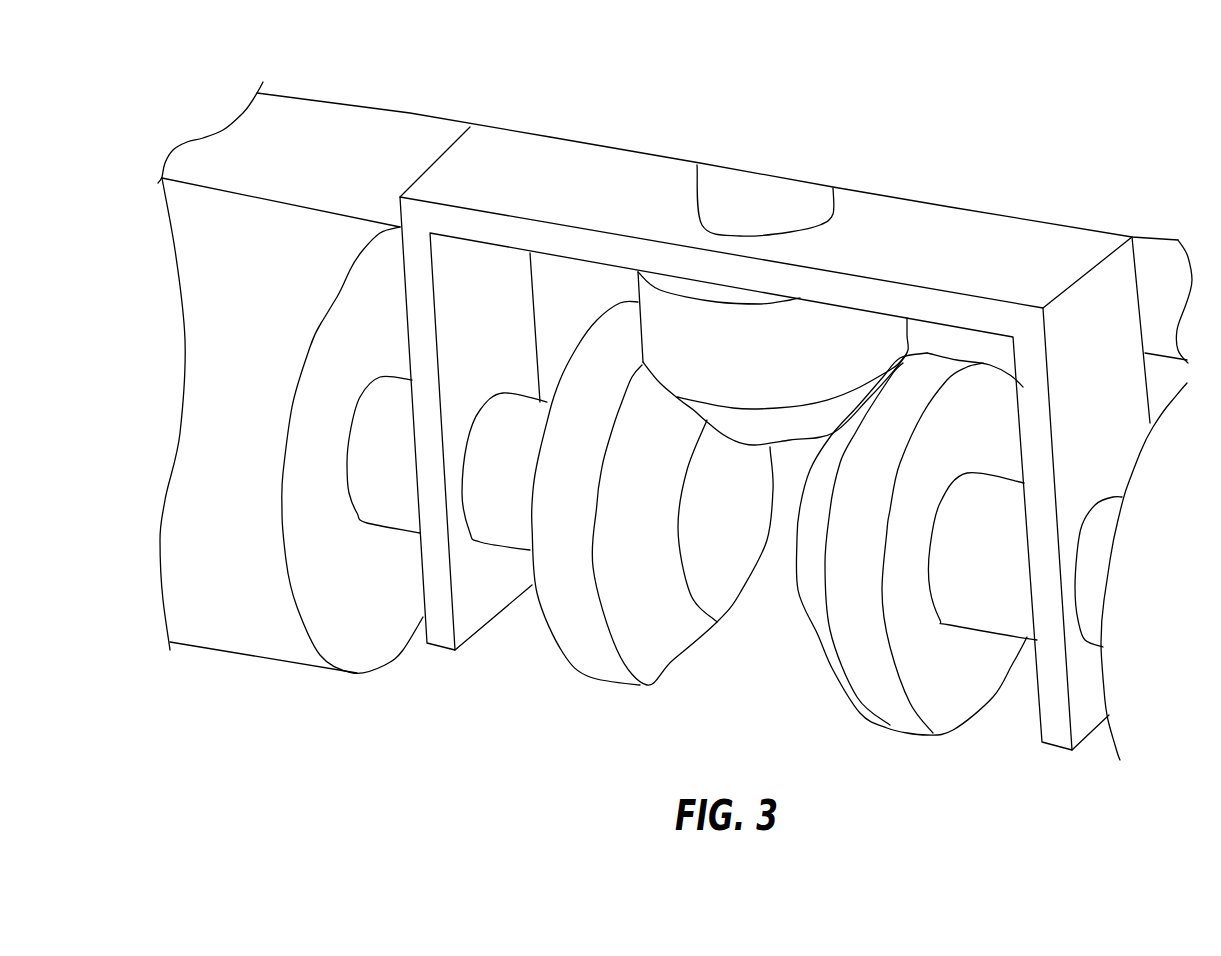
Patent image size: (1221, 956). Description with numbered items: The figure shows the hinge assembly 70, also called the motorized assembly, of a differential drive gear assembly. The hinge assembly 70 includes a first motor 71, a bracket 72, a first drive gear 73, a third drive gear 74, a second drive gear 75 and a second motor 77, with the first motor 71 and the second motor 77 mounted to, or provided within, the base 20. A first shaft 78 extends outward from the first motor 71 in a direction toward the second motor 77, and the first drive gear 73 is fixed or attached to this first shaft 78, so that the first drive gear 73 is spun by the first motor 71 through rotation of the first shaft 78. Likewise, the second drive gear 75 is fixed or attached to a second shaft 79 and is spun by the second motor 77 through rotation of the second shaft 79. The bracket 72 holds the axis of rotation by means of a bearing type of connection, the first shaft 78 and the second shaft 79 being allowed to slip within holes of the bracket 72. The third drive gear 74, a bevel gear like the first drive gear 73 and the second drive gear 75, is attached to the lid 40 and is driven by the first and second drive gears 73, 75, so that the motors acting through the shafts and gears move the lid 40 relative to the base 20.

The base 20 is at (320, 665).
The lid 40 is at (1005, 215).
The hinge assembly 70 is at (580, 83).
The first motor 71 is at (220, 628).
The bracket 72 is at (593, 175).
The first drive gear 73 is at (575, 633).
The third drive gear 74 is at (833, 342).
The second drive gear 75 is at (867, 668).
The second motor 77 is at (1132, 705).
The first shaft 78 is at (507, 515).
The second shaft 79 is at (987, 610).